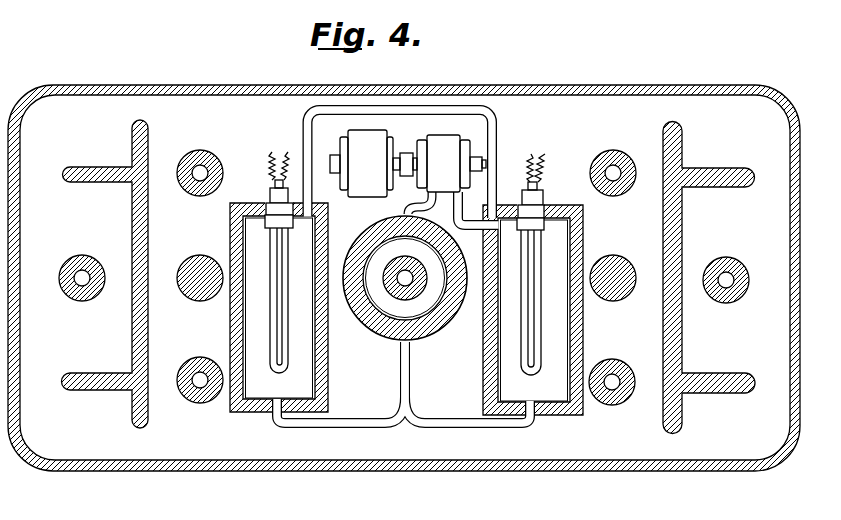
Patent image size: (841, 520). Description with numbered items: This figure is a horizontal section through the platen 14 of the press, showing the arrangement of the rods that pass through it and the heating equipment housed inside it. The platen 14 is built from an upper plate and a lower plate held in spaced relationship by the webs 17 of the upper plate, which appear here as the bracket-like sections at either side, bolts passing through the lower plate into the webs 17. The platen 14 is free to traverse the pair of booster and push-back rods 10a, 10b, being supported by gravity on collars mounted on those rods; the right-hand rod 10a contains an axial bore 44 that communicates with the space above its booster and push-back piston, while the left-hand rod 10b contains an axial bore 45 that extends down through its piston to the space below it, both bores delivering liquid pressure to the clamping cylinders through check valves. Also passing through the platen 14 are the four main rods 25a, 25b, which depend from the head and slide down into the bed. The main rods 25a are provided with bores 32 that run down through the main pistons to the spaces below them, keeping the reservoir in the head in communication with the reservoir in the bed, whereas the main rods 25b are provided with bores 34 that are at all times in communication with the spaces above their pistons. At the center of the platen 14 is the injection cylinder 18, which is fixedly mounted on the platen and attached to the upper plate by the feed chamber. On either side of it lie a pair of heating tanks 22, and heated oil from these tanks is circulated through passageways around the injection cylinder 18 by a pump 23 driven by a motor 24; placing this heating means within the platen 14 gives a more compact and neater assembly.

The platen 14 is at (265, 471).
The webs 17 is at (133, 333).
The injection cylinder 18 is at (367, 241).
The heating tanks 22 is at (258, 414).
The pump 23 is at (443, 163).
The motor 24 is at (365, 163).
The main rods 25a is at (612, 153).
The main rods 25b is at (203, 159).
The bores 32 is at (618, 170).
The bores 34 is at (208, 170).
The booster and push-back rod 10a is at (732, 263).
The booster and push-back rod 10b is at (86, 265).
The axial bore 44 is at (730, 280).
The axial bore 45 is at (78, 276).